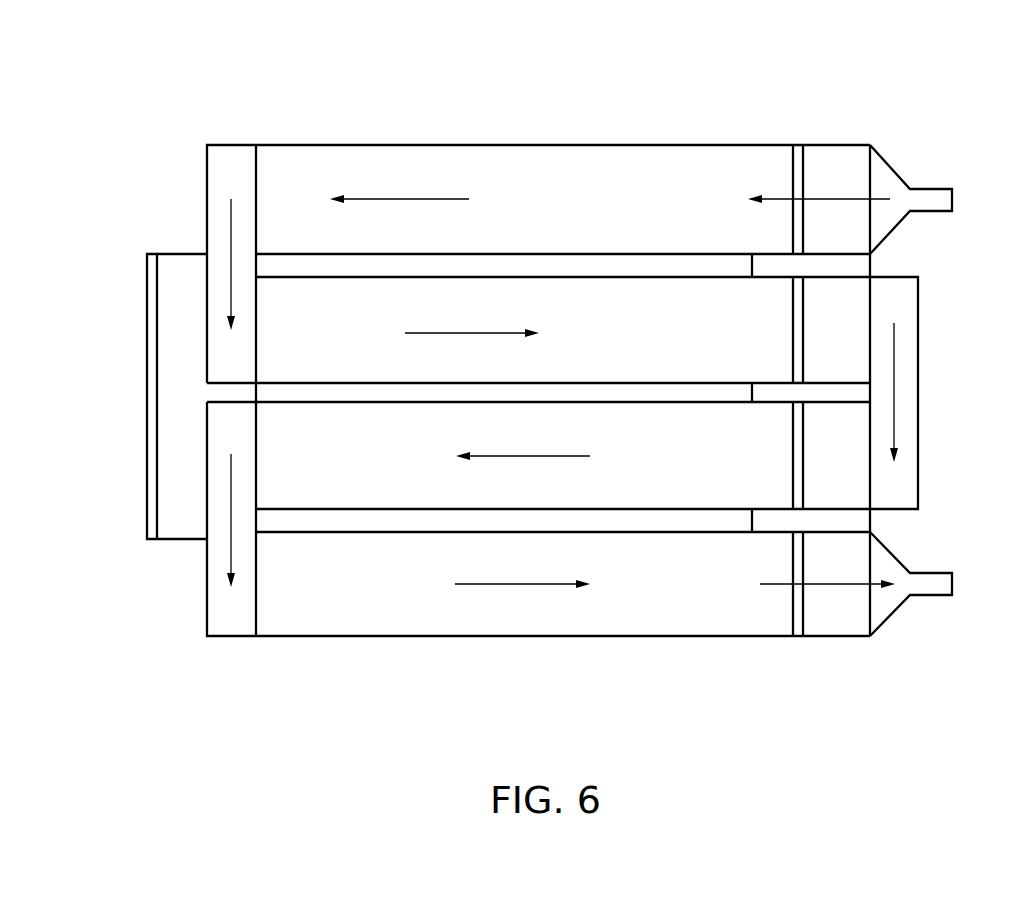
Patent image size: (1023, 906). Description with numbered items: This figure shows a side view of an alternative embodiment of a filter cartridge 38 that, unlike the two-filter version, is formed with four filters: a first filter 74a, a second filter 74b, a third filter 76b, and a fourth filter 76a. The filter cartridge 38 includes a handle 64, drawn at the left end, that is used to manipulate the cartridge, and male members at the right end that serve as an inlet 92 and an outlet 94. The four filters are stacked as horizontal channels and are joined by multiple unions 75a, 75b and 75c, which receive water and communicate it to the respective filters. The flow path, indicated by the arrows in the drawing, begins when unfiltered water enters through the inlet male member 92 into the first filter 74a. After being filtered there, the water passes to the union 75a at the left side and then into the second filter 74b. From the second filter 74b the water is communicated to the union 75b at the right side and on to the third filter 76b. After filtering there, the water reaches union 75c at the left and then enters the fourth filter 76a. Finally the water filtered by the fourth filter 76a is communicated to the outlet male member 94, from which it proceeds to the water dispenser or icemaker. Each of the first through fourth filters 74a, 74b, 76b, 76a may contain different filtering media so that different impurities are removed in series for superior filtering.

The filter cartridge 38 is at (806, 70).
The handle 64 is at (147, 380).
The first filter 74a is at (537, 160).
The second filter 74b is at (605, 290).
The union 75a is at (207, 178).
The union 75b is at (918, 393).
The union 75c is at (207, 598).
The fourth filter 76a is at (645, 615).
The third filter 76b is at (643, 415).
The inlet male member 92 is at (952, 200).
The outlet male member 94 is at (952, 584).